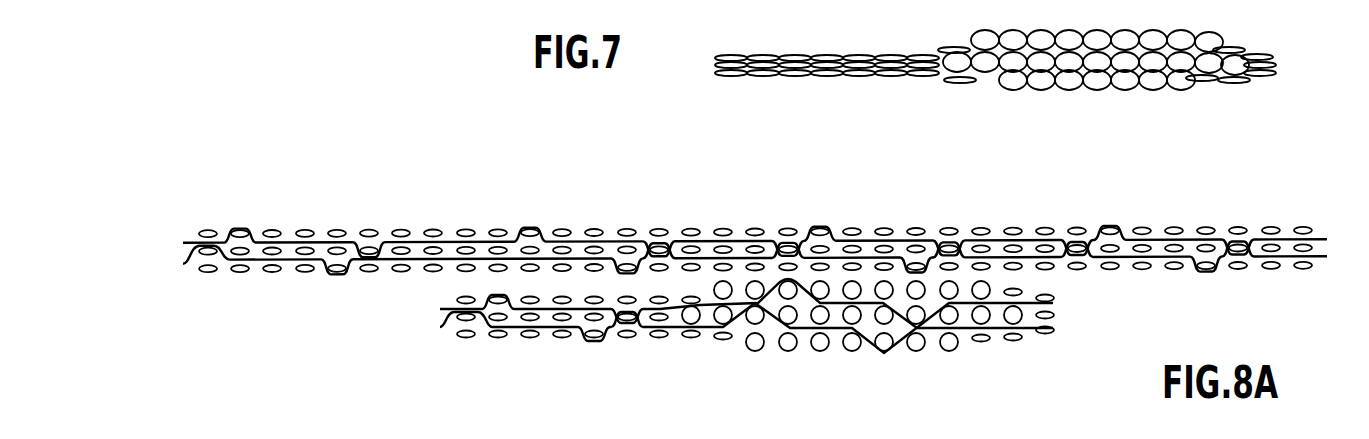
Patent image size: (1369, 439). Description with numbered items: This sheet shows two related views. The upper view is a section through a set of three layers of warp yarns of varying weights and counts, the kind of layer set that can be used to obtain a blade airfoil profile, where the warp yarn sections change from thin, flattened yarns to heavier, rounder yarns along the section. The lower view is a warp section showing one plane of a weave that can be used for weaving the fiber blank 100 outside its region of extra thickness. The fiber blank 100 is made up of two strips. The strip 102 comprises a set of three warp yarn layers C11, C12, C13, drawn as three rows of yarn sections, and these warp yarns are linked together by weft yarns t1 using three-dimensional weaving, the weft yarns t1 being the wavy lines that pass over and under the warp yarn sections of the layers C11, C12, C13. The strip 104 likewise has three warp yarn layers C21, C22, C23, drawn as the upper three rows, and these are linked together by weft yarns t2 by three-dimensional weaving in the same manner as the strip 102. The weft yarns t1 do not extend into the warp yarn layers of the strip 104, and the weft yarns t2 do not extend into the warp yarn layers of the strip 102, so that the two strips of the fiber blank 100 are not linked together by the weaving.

The fiber blank 100 is at (610, 198).
The strip 102 is at (848, 367).
The strip 104 is at (875, 217).
The weft yarns t1 is at (550, 327).
The weft yarns t2 is at (445, 258).
The warp yarn layer C11 is at (779, 340).
The warp yarn layer C12 is at (779, 316).
The warp yarn layer C13 is at (779, 292).
The warp yarn layer C21 is at (781, 270).
The warp yarn layer C22 is at (781, 246).
The warp yarn layer C23 is at (781, 223).